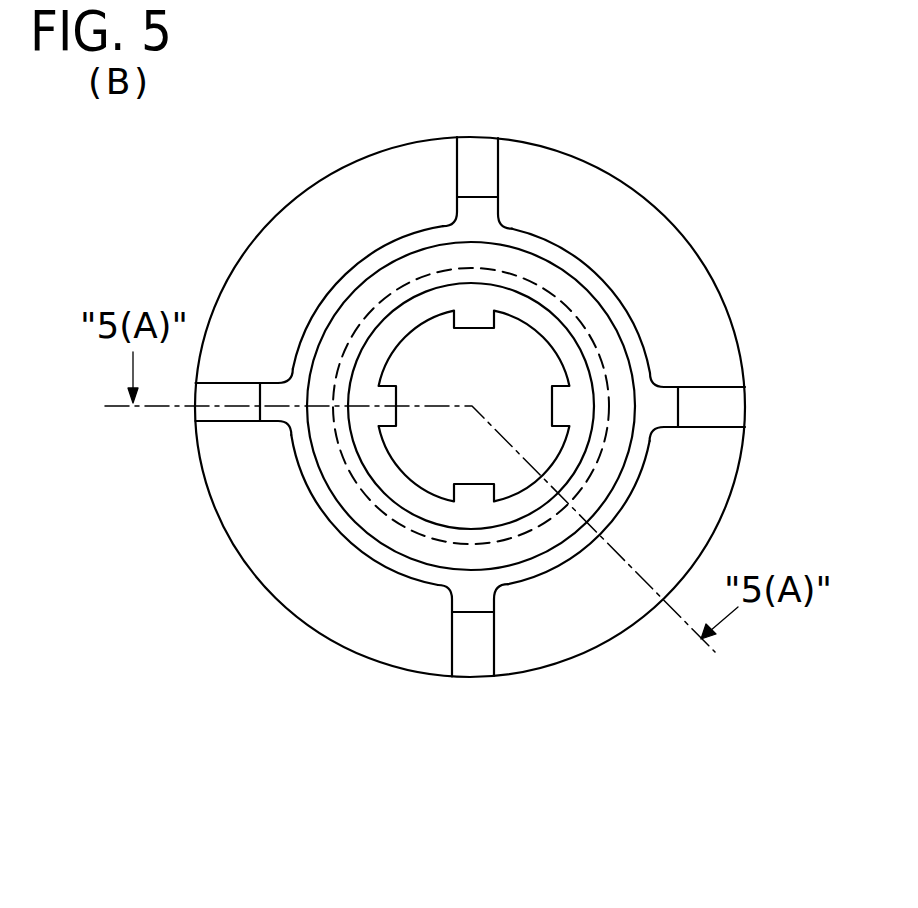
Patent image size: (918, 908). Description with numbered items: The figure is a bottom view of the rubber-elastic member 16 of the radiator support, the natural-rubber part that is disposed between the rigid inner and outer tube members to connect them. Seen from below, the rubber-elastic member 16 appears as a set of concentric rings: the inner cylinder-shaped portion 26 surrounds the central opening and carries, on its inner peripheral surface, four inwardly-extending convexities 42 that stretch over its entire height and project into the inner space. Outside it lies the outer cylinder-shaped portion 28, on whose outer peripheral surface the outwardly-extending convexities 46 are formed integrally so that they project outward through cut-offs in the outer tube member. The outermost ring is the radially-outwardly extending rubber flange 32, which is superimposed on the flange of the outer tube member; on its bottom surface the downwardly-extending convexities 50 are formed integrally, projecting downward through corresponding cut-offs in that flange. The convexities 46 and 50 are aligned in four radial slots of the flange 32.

The rubber-elastic member 16 is at (662, 167).
The rubber flange 32 is at (712, 296).
The outwardly-extending convexities 46 is at (476, 209).
The downwardly-extending convexities 50 is at (481, 158).
The outer cylinder-shaped portion 28 is at (390, 552).
The inner cylinder-shaped portion 26 is at (383, 472).
The inwardly-extending convexities 42 is at (553, 406).